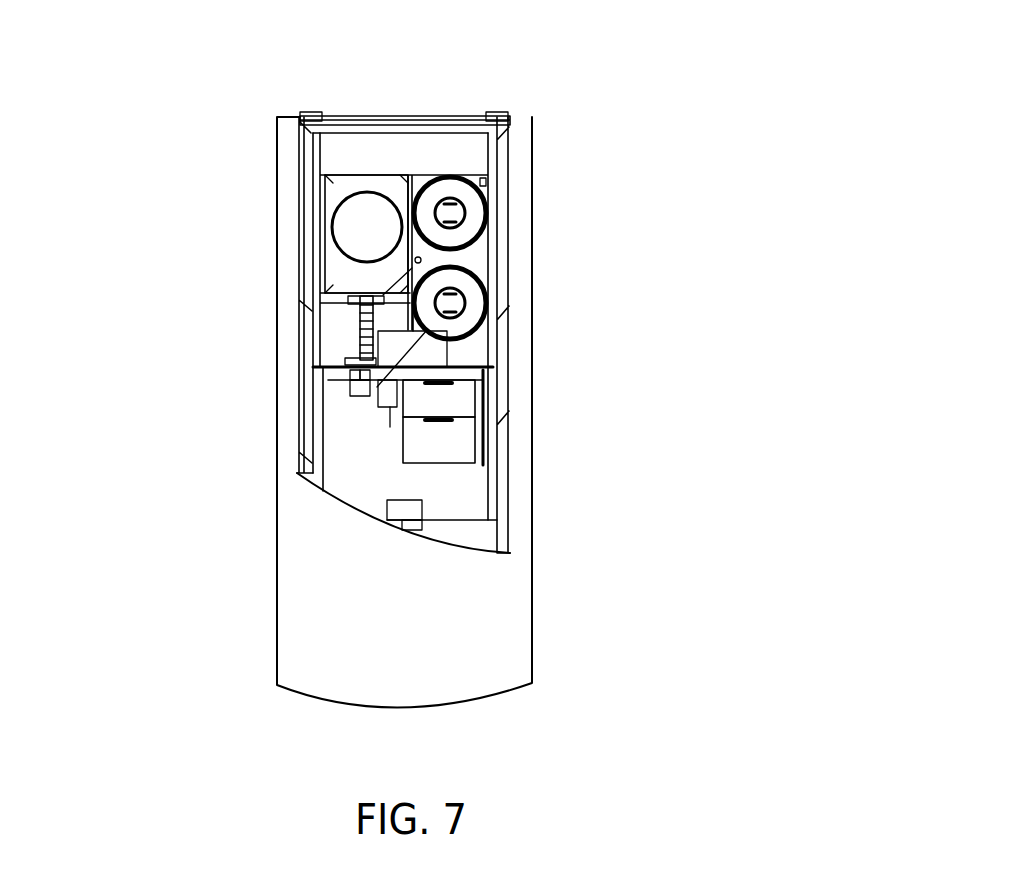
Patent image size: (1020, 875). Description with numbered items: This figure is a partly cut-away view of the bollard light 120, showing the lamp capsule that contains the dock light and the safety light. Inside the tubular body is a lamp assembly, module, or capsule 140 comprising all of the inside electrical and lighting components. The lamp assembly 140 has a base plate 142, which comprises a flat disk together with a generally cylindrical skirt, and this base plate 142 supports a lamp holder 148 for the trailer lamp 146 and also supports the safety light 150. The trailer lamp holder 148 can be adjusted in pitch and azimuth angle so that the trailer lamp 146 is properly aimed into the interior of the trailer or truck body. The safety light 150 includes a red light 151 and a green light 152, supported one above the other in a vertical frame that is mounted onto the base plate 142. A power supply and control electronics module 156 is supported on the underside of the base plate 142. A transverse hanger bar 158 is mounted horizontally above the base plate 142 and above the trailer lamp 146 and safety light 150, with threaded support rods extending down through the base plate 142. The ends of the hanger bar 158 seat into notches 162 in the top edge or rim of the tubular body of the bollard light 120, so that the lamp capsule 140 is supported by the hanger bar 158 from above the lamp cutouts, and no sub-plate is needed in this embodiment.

The bollard light 120 is at (214, 588).
The lamp assembly 140 is at (732, 153).
The base plate 142 is at (348, 372).
The trailer lamp 146 is at (352, 220).
The lamp holder 148 is at (313, 150).
The safety light 150 is at (482, 260).
The red light 151 is at (475, 302).
The green light 152 is at (452, 190).
The power supply and control electronics module 156 is at (457, 440).
The hanger bar 158 is at (383, 117).
The notches 162 is at (273, 123).